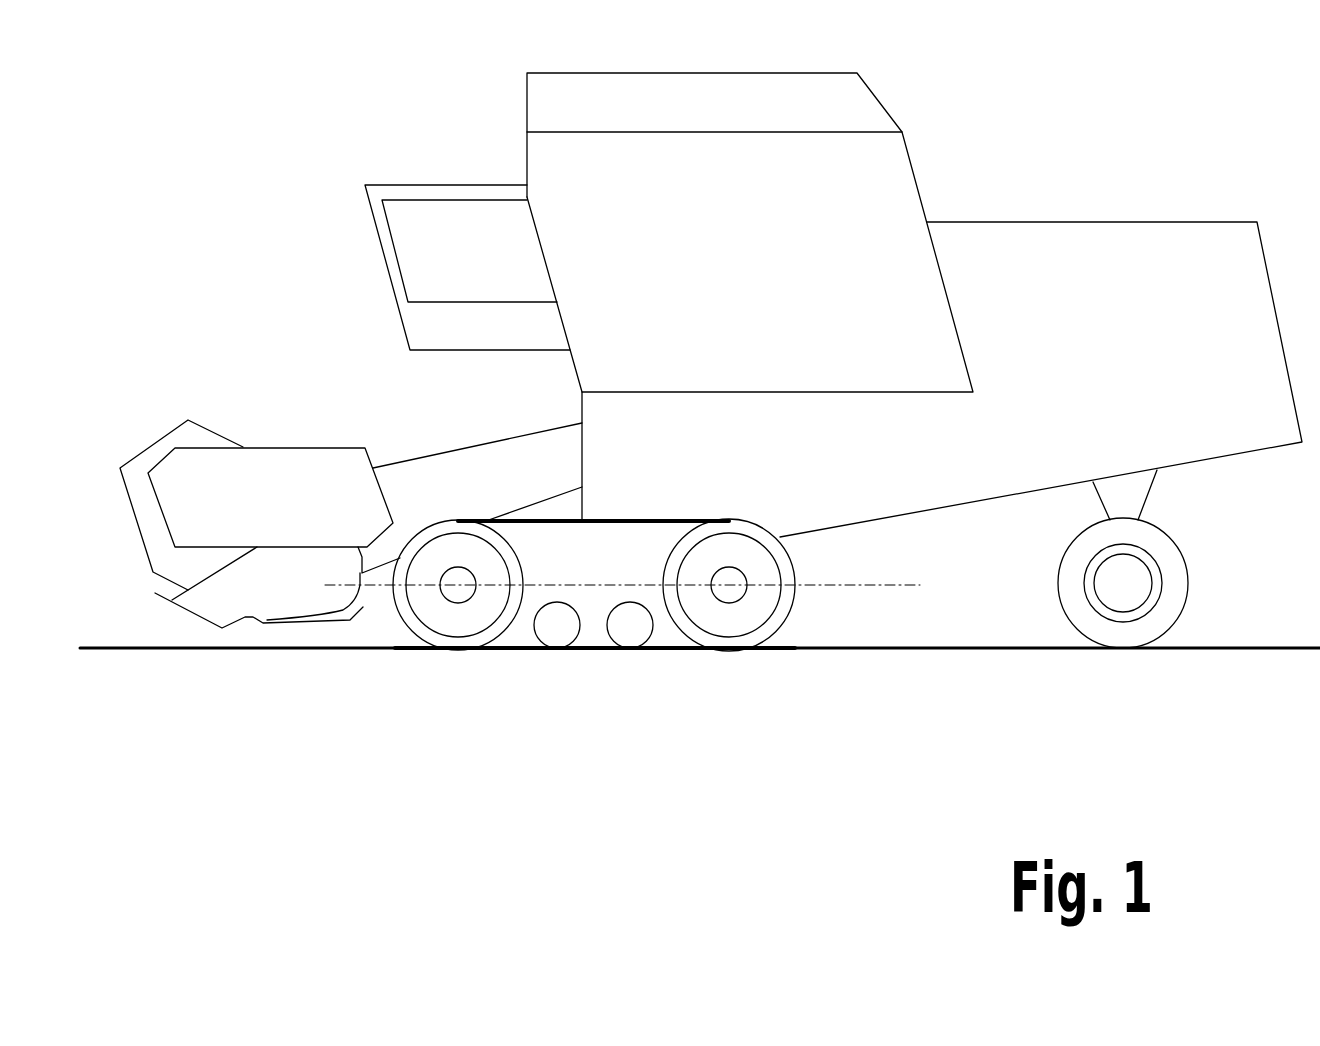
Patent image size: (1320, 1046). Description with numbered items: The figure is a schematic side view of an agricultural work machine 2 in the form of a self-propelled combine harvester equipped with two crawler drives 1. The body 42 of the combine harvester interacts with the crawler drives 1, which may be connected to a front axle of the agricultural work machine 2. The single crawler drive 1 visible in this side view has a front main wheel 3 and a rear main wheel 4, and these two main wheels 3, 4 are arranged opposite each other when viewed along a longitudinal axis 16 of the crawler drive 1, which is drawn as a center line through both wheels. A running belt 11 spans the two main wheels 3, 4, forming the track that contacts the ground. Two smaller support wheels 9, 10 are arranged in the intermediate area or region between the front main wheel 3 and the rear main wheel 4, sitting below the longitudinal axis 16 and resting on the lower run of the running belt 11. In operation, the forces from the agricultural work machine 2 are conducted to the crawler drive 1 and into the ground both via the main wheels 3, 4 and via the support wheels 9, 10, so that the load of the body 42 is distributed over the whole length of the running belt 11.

The crawler drive 1 is at (430, 470).
The agricultural work machine 2 is at (259, 188).
The front main wheel 3 is at (462, 617).
The rear main wheel 4 is at (728, 617).
The support wheel 9 is at (558, 633).
The support wheel 10 is at (632, 633).
The running belt 11 is at (594, 596).
The longitudinal axis 16 is at (868, 590).
The body 42 is at (1072, 195).